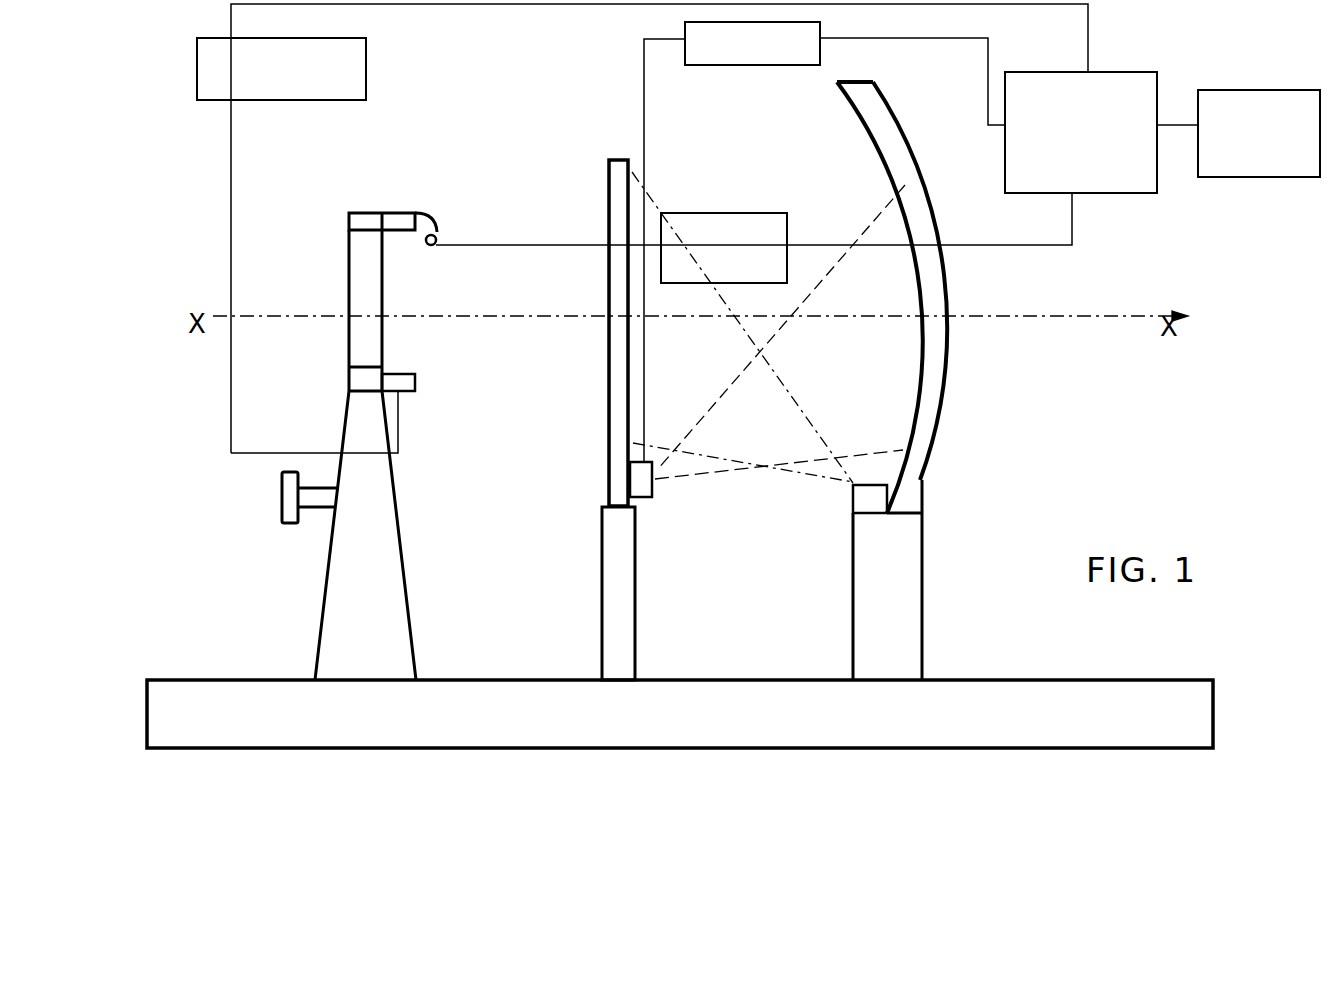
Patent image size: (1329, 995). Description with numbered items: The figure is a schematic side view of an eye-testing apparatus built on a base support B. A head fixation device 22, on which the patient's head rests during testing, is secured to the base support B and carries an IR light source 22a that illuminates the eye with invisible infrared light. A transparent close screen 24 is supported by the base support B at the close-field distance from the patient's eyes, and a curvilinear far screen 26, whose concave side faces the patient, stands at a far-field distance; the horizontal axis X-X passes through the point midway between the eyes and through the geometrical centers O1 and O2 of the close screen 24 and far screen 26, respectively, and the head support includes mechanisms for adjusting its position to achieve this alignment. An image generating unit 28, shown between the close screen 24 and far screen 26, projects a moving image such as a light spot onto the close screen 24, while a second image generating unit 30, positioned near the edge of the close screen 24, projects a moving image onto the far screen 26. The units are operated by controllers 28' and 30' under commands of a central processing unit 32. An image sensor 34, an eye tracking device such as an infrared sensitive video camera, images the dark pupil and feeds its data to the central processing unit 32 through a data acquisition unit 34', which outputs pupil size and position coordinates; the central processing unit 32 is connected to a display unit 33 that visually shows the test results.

The head fixation device 22 is at (345, 205).
The IR light source 22a is at (405, 395).
The transparent close screen 24 is at (604, 162).
The curvilinear far screen 26 is at (952, 405).
The image generating unit 28 is at (853, 580).
The controller 28' is at (281, 126).
The second image generating unit 30 is at (681, 517).
The controller 30' is at (752, 72).
The central processing unit 32 is at (1094, 199).
The display unit 33 is at (1259, 181).
The image sensor 34 is at (440, 147).
The data acquisition unit 34' is at (724, 210).
The base support B is at (884, 752).
The geometrical center of the close screen O1 is at (608, 316).
The geometrical center of the far screen O2 is at (937, 315).